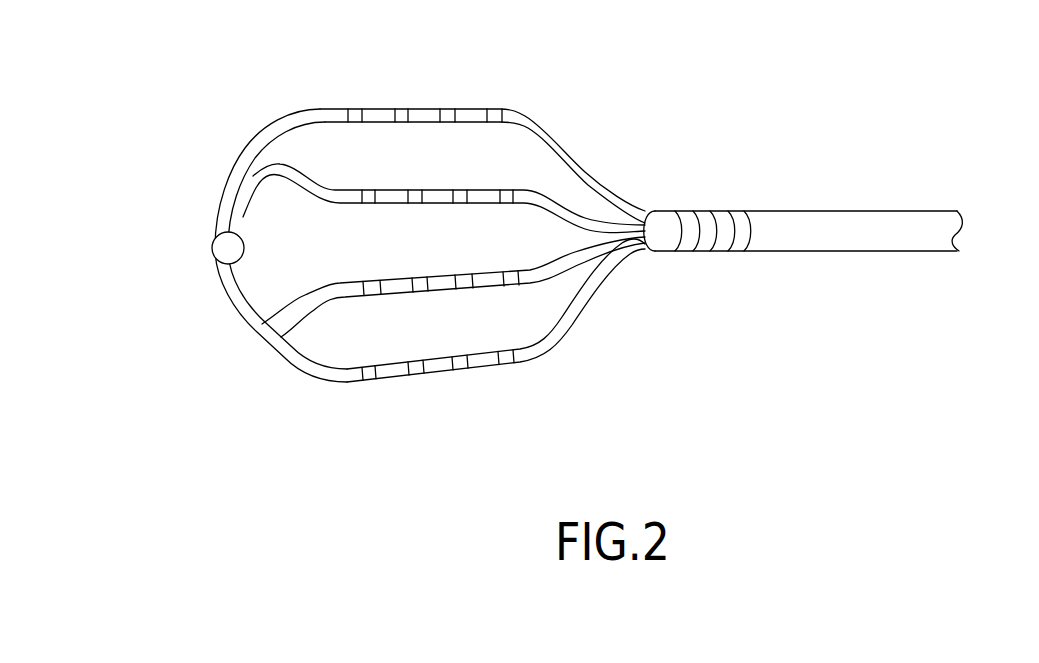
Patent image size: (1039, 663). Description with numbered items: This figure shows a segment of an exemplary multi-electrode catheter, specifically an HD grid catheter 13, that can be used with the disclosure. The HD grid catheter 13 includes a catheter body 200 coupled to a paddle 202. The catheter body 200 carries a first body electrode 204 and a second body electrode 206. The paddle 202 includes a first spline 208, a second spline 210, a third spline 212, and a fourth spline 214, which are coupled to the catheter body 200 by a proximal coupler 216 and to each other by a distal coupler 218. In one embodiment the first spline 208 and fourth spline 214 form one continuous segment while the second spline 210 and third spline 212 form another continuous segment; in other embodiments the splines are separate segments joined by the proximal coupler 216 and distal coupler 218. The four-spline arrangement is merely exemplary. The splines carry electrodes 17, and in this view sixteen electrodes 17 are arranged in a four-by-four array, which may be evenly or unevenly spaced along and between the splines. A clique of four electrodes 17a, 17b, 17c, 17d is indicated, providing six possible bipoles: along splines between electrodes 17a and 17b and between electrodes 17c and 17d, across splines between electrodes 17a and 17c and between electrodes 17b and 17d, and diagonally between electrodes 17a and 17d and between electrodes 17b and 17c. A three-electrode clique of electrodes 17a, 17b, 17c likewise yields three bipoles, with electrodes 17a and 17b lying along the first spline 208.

The HD grid catheter 13 is at (931, 115).
The catheter body 200 is at (933, 243).
The paddle 202 is at (258, 92).
The first body electrode 204 is at (740, 217).
The second body electrode 206 is at (706, 220).
The first spline 208 is at (527, 120).
The second spline 210 is at (300, 181).
The third spline 212 is at (270, 322).
The fourth spline 214 is at (337, 375).
The proximal coupler 216 is at (668, 224).
The distal coupler 218 is at (214, 250).
The electrodes 17 is at (415, 375).
The electrode 17a is at (354, 108).
The electrode 17b is at (398, 123).
The electrode 17c is at (365, 206).
The electrode 17d is at (413, 206).